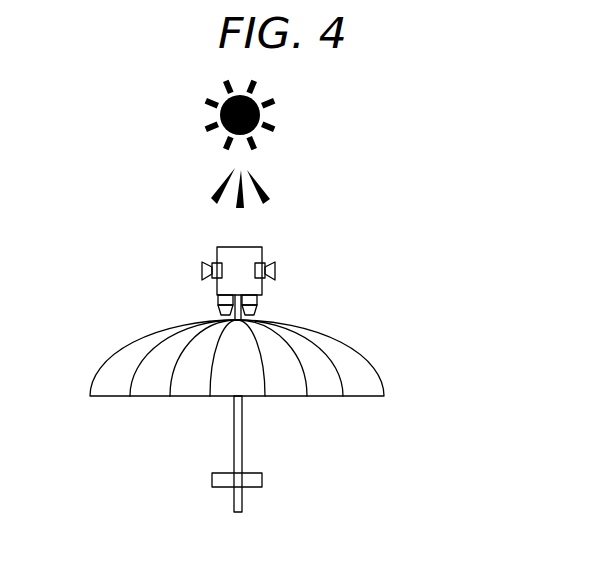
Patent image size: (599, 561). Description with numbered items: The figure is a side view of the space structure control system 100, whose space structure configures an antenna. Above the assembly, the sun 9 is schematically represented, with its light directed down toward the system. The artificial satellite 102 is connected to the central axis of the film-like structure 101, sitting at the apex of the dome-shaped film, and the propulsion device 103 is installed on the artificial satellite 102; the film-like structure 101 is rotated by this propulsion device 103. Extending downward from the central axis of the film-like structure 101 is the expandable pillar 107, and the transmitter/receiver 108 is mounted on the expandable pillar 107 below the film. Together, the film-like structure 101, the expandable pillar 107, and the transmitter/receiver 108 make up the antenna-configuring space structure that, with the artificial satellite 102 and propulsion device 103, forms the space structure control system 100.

The sun 9 is at (277, 115).
The space structure control system 100 is at (464, 290).
The film-like structure 101 is at (363, 355).
The artificial satellite 102 is at (262, 250).
The propulsion device 103 is at (275, 270).
The expandable pillar 107 is at (242, 440).
The transmitter/receiver 108 is at (262, 480).